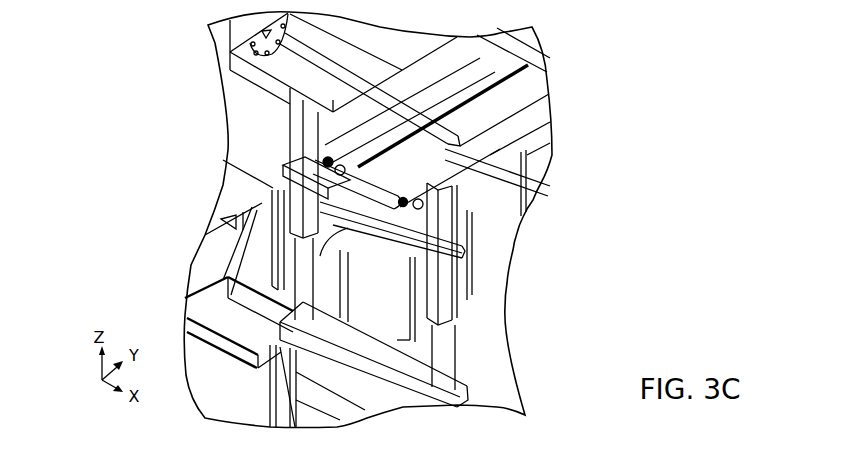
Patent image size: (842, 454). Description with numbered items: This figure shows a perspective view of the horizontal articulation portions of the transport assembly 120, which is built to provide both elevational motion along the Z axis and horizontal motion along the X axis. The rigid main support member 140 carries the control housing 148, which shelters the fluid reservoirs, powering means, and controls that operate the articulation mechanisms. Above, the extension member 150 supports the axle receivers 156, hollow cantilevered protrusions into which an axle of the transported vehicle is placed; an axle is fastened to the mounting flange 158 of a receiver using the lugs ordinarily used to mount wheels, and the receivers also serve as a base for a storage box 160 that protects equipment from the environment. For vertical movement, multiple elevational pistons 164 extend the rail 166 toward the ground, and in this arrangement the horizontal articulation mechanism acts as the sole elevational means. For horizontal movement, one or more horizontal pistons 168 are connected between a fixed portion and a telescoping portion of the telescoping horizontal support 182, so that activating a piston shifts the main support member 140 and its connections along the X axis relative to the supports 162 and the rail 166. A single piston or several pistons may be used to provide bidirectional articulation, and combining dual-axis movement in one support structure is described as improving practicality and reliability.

The transport assembly 120 is at (184, 36).
The main support member 140 is at (212, 403).
The control housing 148 is at (270, 120).
The extension member 150 is at (507, 117).
The axle receiver 156 is at (345, 67).
The mounting flange 158 is at (224, 70).
The storage box 160 is at (341, 38).
The support 162 is at (282, 152).
The elevational piston 164 is at (268, 204).
The rail 166 is at (462, 387).
The horizontal piston 168 is at (373, 201).
The telescoping horizontal support 182 is at (402, 246).